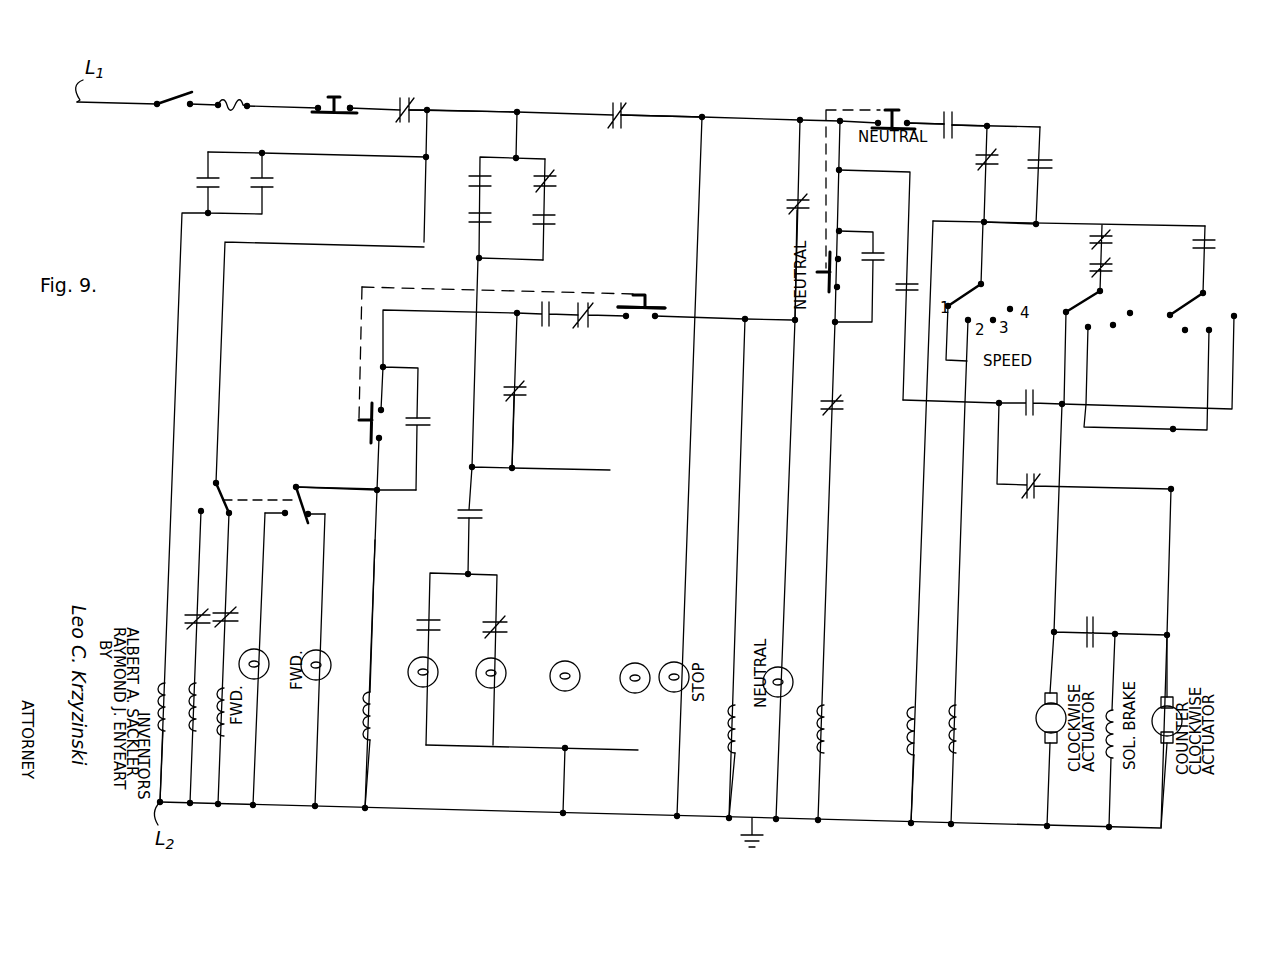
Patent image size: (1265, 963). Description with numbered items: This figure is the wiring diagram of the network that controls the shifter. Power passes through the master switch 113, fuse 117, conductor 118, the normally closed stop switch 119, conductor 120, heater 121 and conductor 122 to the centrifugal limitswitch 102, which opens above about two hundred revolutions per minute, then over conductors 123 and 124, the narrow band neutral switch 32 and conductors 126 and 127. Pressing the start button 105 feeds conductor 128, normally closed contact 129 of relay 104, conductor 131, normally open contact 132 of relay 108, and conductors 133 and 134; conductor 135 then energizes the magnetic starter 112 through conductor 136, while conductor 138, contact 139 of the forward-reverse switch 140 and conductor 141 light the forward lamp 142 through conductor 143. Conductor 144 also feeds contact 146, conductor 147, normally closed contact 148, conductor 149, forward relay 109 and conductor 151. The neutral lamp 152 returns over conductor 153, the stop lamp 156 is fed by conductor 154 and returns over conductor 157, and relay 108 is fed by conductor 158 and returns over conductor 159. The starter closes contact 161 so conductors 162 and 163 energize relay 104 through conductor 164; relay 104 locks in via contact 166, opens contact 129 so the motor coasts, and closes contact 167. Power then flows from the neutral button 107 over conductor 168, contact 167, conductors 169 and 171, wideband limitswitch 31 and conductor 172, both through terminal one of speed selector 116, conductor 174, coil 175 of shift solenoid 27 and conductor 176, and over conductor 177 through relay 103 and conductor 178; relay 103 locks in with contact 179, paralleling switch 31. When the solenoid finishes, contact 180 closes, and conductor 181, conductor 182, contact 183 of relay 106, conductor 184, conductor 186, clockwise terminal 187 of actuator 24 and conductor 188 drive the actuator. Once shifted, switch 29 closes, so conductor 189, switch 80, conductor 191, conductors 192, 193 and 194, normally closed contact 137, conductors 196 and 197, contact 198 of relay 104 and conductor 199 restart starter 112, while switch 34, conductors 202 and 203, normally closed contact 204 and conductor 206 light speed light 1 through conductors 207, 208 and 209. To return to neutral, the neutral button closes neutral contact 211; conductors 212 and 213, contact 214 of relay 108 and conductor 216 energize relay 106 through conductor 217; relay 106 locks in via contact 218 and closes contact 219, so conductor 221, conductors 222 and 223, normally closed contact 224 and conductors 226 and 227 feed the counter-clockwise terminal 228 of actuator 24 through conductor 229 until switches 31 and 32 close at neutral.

The speed light 1 is at (507, 676).
The actuator 24 is at (1038, 738).
The shift solenoid 27 is at (966, 736).
The switch 29 is at (496, 215).
The wideband limitswitch 31 is at (975, 162).
The narrow band neutral switch 32 is at (785, 204).
The switch 34 is at (485, 512).
The normally open switch 80 is at (497, 180).
The centrifugal limitswitch 102 is at (622, 100).
The double pole double throw relay 103 is at (938, 690).
The quadruple pole double throw relay 104 is at (160, 690).
The start button 105 is at (365, 428).
The triple pole double throw relay 106 is at (830, 718).
The neutral button 107 is at (893, 106).
The double pole double throw relay 108 is at (740, 726).
The forward relay 109 is at (200, 736).
The magnetic starter 112 is at (376, 712).
The master switch 113 is at (176, 92).
The speed selector switch 116 is at (1128, 372).
The fuse 117 is at (235, 103).
The conductor 118 is at (300, 106).
The stop switch 119 is at (349, 104).
The conductor 120 is at (395, 104).
The heater 121 is at (425, 100).
The conductor 122 is at (480, 110).
The conductor 123 is at (680, 116).
The conductor 124 is at (796, 154).
The conductor 126 is at (794, 240).
The conductor 127 is at (730, 318).
The conductor 128 is at (622, 320).
The normally closed contact 129 is at (583, 328).
The conductor 131 is at (565, 292).
The normally open contact 132 is at (545, 326).
The conductor 133 is at (488, 290).
The conductor 134 is at (400, 462).
The conductor 135 is at (376, 535).
The conductor 136 is at (370, 776).
The normally closed contact 137 is at (528, 390).
The conductor 138 is at (345, 486).
The contact 139 is at (312, 504).
The forward-reverse switch 140 is at (268, 498).
The conductor 141 is at (325, 560).
The forward lamp 142 is at (330, 665).
The conductor 143 is at (372, 700).
The conductor 144 is at (432, 140).
The contact 146 is at (203, 484).
The conductor 147 is at (240, 540).
The normally closed contact 148 is at (240, 612).
The conductor 149 is at (236, 660).
The conductor 151 is at (235, 765).
The neutral lamp 152 is at (788, 668).
The conductor 153 is at (785, 748).
The conductor 154 is at (738, 345).
The stop lamp 156 is at (688, 660).
The conductor 157 is at (680, 758).
The conductor 158 is at (742, 488).
The conductor 159 is at (734, 770).
The contact 161 is at (195, 182).
The conductor 162 is at (342, 155).
The conductor 163 is at (178, 348).
The conductor 164 is at (162, 788).
The contact 166 is at (275, 186).
The contact 167 is at (952, 110).
The conductor 168 is at (930, 112).
The conductor 169 is at (975, 124).
The conductor 171 is at (988, 146).
The conductor 172 is at (988, 205).
The conductor 174 is at (963, 515).
The coil 175 is at (962, 712).
The conductor 176 is at (955, 780).
The conductor 177 is at (965, 278).
The conductor 178 is at (930, 782).
The contact 179 is at (1055, 164).
The normally closed contact 180 is at (1115, 240).
The conductor 181 is at (1106, 222).
The conductor 182 is at (1115, 255).
The contact 183 is at (1115, 268).
The conductor 184 is at (1108, 286).
The conductor 186 is at (1064, 460).
The clockwise terminal 187 is at (1055, 690).
The conductor 188 is at (1050, 810).
The conductor 189 is at (520, 140).
The conductor 191 is at (478, 196).
The conductor 192 is at (478, 250).
The conductor 193 is at (495, 448).
The conductor 194 is at (516, 418).
The conductor 196 is at (514, 362).
The conductor 197 is at (400, 368).
The contact 198 is at (432, 418).
The conductor 199 is at (412, 476).
The conductor 202 is at (472, 548).
The conductor 203 is at (500, 600).
The normally closed contact 204 is at (500, 630).
The conductor 206 is at (498, 646).
The conductor 207 is at (496, 715).
The conductor 208 is at (505, 748).
The conductor 209 is at (568, 790).
The neutral contact 211 is at (847, 278).
The conductor 212 is at (846, 165).
The conductor 213 is at (838, 356).
The contact 214 is at (846, 412).
The conductor 216 is at (836, 506).
The conductor 217 is at (830, 784).
The contacts 218 is at (878, 250).
The normally open contact 219 is at (903, 293).
The conductor 221 is at (933, 221).
The conductor 222 is at (898, 356).
The conductor 223 is at (1000, 430).
The normally closed contact 224 is at (1028, 496).
The conductor 226 is at (1105, 490).
The conductor 227 is at (1170, 546).
The counter-clockwise terminal 228 is at (1169, 690).
The conductor 229 is at (1162, 820).